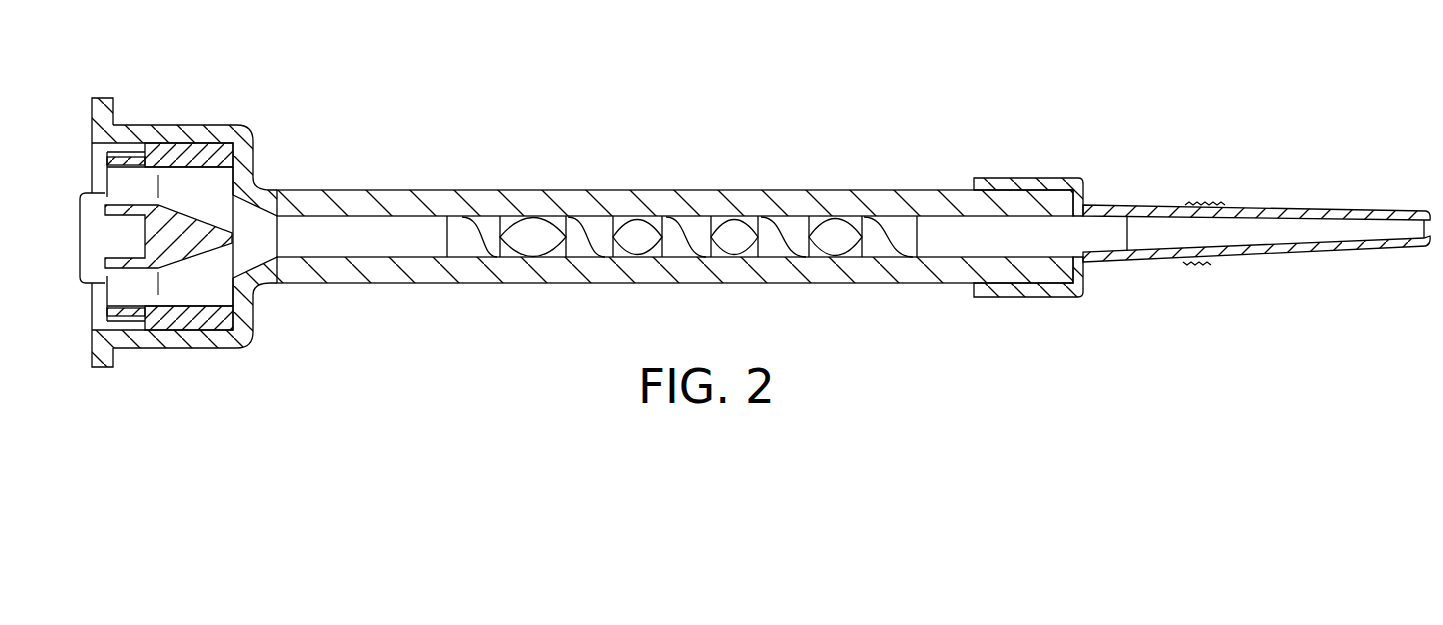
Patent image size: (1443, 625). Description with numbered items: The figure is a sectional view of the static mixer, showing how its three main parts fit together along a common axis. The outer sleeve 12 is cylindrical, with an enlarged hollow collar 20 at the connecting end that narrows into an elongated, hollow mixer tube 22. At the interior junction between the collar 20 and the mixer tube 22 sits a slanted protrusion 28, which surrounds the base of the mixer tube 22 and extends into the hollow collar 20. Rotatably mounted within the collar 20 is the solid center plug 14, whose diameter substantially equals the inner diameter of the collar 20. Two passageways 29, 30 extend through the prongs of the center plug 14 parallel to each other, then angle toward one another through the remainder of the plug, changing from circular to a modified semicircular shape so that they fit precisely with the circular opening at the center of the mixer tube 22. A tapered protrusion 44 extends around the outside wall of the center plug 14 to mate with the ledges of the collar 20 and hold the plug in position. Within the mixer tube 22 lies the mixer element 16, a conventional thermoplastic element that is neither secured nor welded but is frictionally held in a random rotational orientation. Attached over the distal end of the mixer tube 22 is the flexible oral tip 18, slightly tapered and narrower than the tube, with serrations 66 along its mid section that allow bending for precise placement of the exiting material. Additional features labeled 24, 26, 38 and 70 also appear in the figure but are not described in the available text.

The outer sleeve 12 is at (750, 254).
The center plug 14 is at (184, 127).
The mixer element 16 is at (898, 218).
The oral tip 18 is at (1035, 183).
The collar 20 is at (199, 334).
The mixer tube 22 is at (545, 284).
The upper flange 24 is at (93, 97).
The lower flange 26 is at (98, 370).
The slanted protrusion 28 is at (208, 277).
The passageway 29 is at (200, 202).
The passageway 30 is at (215, 282).
The cap 38 is at (93, 258).
The protrusion 44 is at (166, 150).
The serrations 66 is at (1256, 243).
The distal tip opening 70 is at (1428, 210).